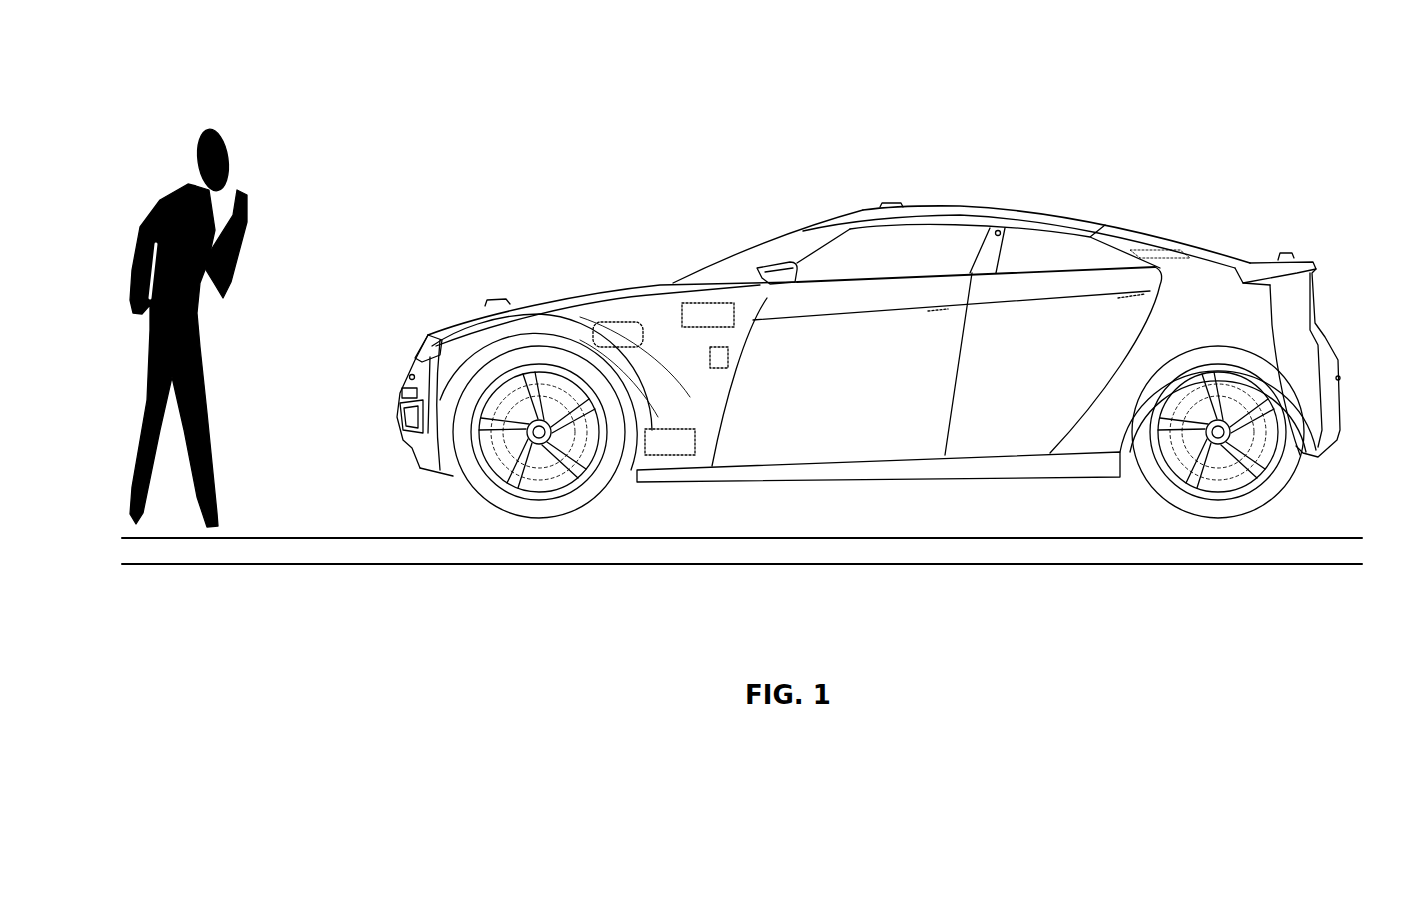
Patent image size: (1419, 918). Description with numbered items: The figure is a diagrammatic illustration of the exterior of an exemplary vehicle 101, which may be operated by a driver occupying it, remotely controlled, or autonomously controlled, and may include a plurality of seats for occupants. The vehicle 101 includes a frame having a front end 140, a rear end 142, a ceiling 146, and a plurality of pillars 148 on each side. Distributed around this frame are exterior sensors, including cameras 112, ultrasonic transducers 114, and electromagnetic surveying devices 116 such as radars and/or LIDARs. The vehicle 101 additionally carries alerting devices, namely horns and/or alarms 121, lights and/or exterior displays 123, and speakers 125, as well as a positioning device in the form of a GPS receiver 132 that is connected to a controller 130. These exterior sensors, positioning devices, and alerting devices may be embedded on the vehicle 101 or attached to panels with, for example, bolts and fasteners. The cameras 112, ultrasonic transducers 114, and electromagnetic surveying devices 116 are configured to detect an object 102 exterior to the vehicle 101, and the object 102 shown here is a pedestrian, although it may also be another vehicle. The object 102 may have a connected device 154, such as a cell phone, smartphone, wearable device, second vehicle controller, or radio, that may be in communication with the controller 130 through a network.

The vehicle 101 is at (892, 65).
The object 102 is at (198, 82).
The cameras 112 is at (1001, 233).
The ultrasonic transducers 114 is at (497, 298).
The electromagnetic surveying devices 116 is at (893, 201).
The horns and/or alarms 121 is at (620, 318).
The lights and/or exterior displays 123 is at (424, 337).
The speakers 125 is at (732, 361).
The controller 130 is at (704, 299).
The GPS receiver 132 is at (668, 456).
The front end 140 is at (596, 286).
The rear end 142 is at (1300, 232).
The ceiling 146 is at (1056, 208).
The pillars 148 is at (985, 277).
The mobile device 154 is at (240, 185).